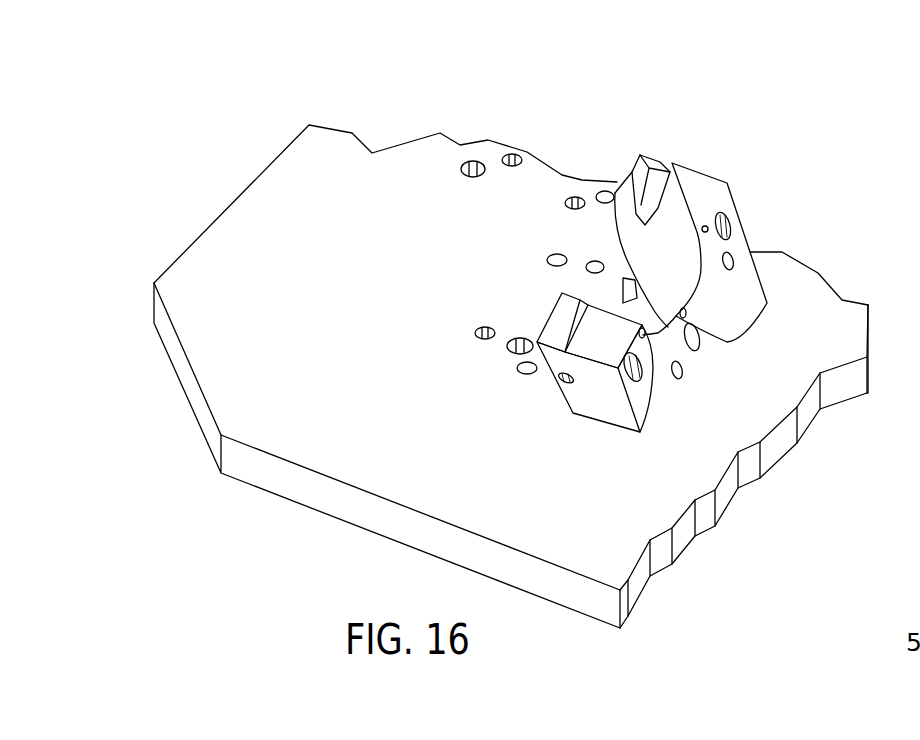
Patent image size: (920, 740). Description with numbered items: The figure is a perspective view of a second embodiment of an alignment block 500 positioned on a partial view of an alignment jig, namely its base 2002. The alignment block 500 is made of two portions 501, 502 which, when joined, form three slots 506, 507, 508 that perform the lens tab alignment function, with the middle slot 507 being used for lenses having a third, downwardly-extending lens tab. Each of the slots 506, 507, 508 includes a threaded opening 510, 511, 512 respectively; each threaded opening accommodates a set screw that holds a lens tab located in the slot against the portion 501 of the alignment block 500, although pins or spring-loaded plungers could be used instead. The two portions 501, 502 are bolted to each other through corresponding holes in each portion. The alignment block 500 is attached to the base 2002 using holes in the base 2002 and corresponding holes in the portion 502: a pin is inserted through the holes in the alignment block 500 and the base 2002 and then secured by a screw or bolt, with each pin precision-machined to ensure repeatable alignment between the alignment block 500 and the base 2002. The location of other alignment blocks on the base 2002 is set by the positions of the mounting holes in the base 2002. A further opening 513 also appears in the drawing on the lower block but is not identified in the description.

The base plate 2002 is at (252, 217).
The clamp assembly 500 is at (701, 281).
The curved guide wall 501 is at (612, 205).
The clamp block 502 is at (720, 256).
The wall end tab 506 is at (652, 187).
The retaining tab 507 is at (623, 288).
The lower guide rail 508 is at (572, 325).
The mounting hole 510 is at (704, 229).
The pin hole 511 is at (688, 315).
The end block 512 is at (567, 382).
The side hole 513 is at (570, 375).